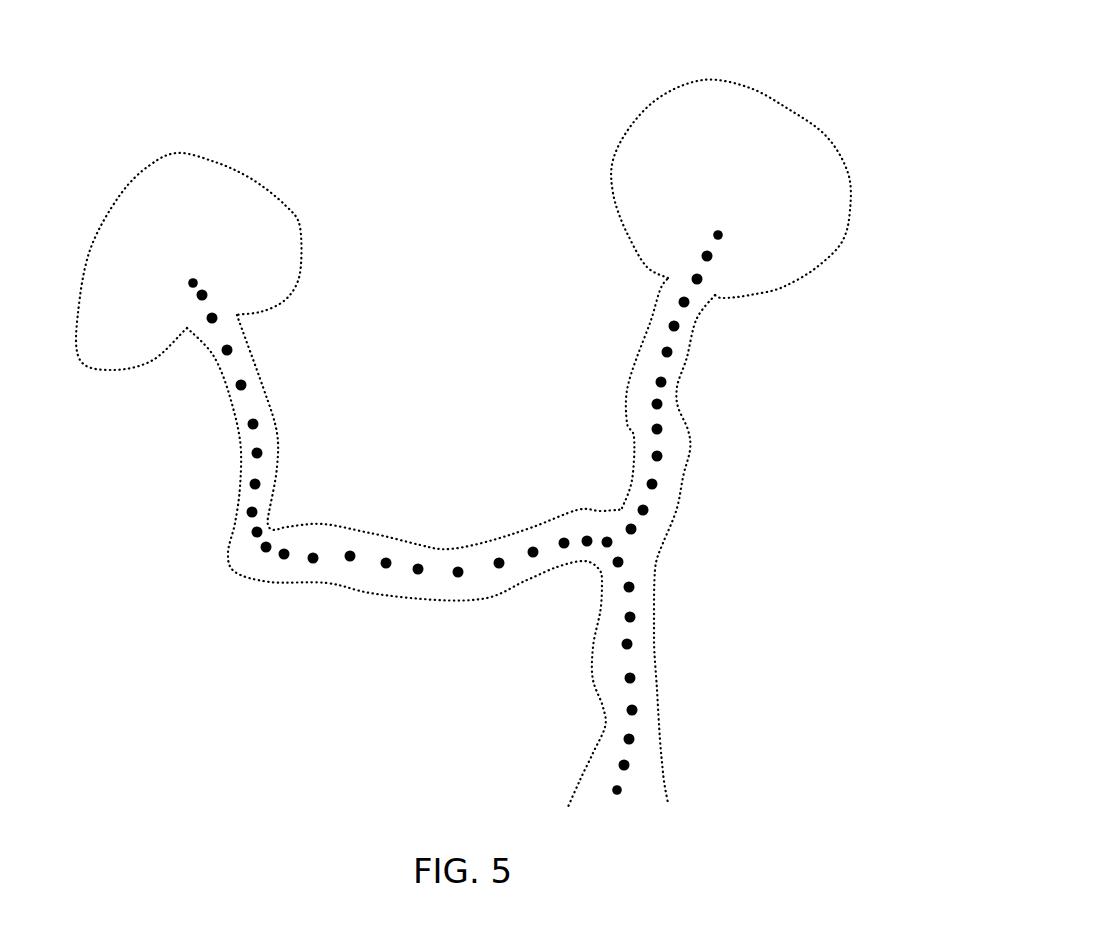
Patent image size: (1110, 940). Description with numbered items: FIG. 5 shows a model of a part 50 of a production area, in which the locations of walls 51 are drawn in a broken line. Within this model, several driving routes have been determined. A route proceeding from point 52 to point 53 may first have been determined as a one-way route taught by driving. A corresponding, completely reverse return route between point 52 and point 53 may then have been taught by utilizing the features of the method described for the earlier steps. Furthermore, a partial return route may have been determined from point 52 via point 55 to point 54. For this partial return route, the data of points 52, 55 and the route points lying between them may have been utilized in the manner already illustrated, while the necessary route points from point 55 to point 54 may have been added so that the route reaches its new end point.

The part of a production area 50 is at (486, 94).
The walls 51 is at (647, 328).
The point 52 is at (613, 790).
The point 53 is at (198, 282).
The point 54 is at (714, 235).
The point 55 is at (605, 547).